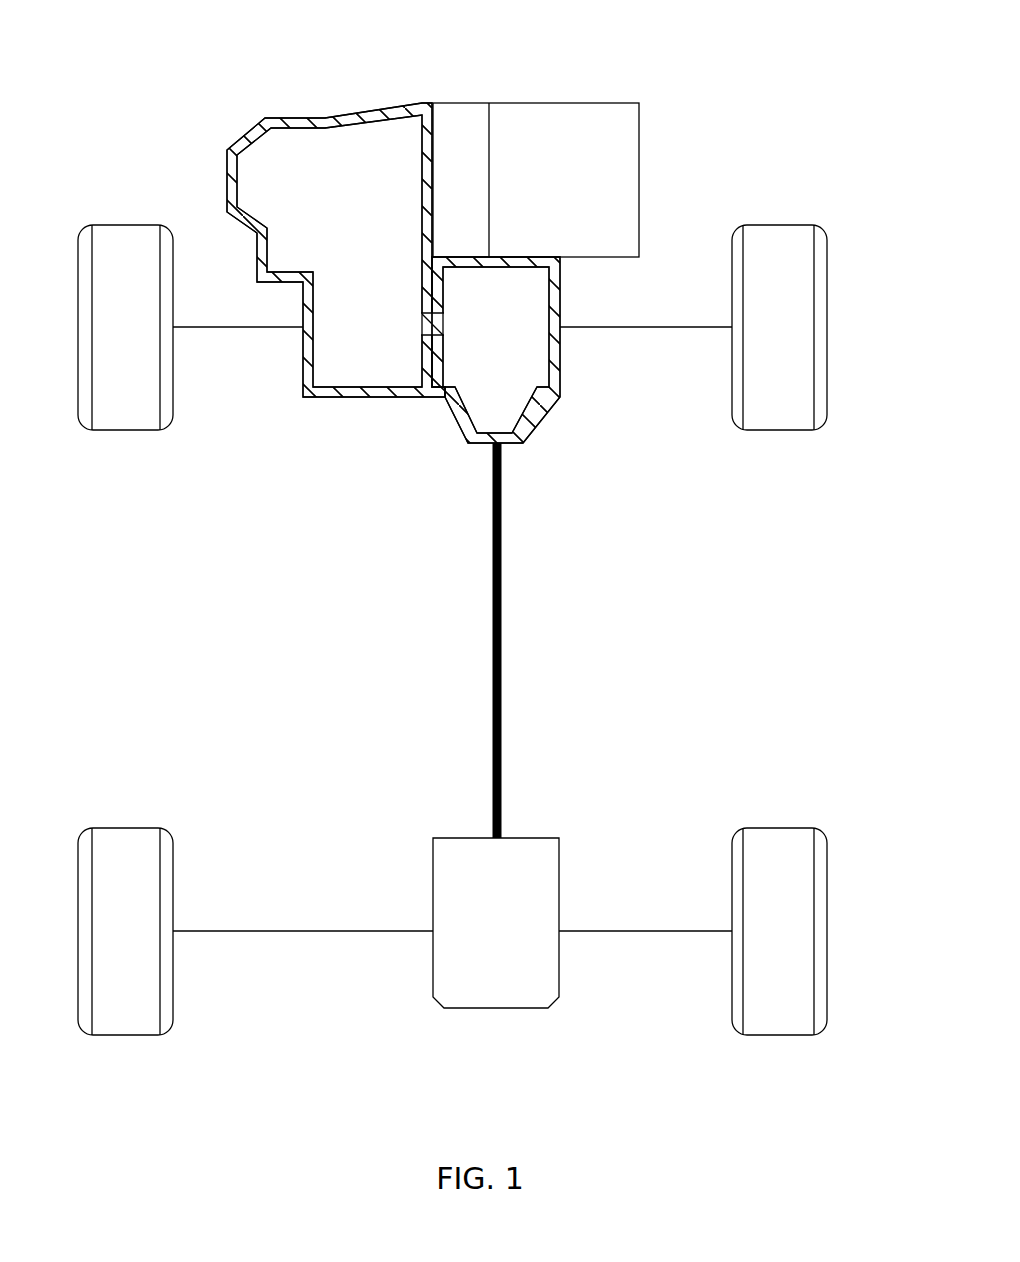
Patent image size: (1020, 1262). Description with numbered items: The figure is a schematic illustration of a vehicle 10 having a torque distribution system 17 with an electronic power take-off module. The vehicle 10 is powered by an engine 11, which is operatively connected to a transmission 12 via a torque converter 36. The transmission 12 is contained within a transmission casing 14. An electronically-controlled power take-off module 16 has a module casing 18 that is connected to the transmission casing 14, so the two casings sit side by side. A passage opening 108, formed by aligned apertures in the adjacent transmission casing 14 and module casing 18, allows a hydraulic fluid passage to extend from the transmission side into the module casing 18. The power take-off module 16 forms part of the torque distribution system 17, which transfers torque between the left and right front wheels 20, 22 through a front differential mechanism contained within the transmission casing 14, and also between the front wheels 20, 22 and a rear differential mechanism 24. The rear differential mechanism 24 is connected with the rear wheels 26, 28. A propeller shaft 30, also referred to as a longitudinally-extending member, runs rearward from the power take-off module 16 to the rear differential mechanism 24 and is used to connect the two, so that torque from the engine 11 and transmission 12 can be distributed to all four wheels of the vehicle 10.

The vehicle 10 is at (812, 93).
The engine 11 is at (574, 199).
The transmission 12 is at (351, 220).
The transmission casing 14 is at (326, 117).
The power take-off module 16 is at (511, 337).
The torque distribution system 17 is at (270, 347).
The module casing 18 is at (559, 367).
The left front wheel 20 is at (116, 225).
The right front wheel 22 is at (790, 225).
The rear differential mechanism 24 is at (511, 934).
The left rear wheel 26 is at (113, 828).
The right rear wheel 28 is at (790, 828).
The propeller shaft 30 is at (501, 600).
The torque converter 36 is at (479, 200).
The passage opening 108 is at (428, 314).